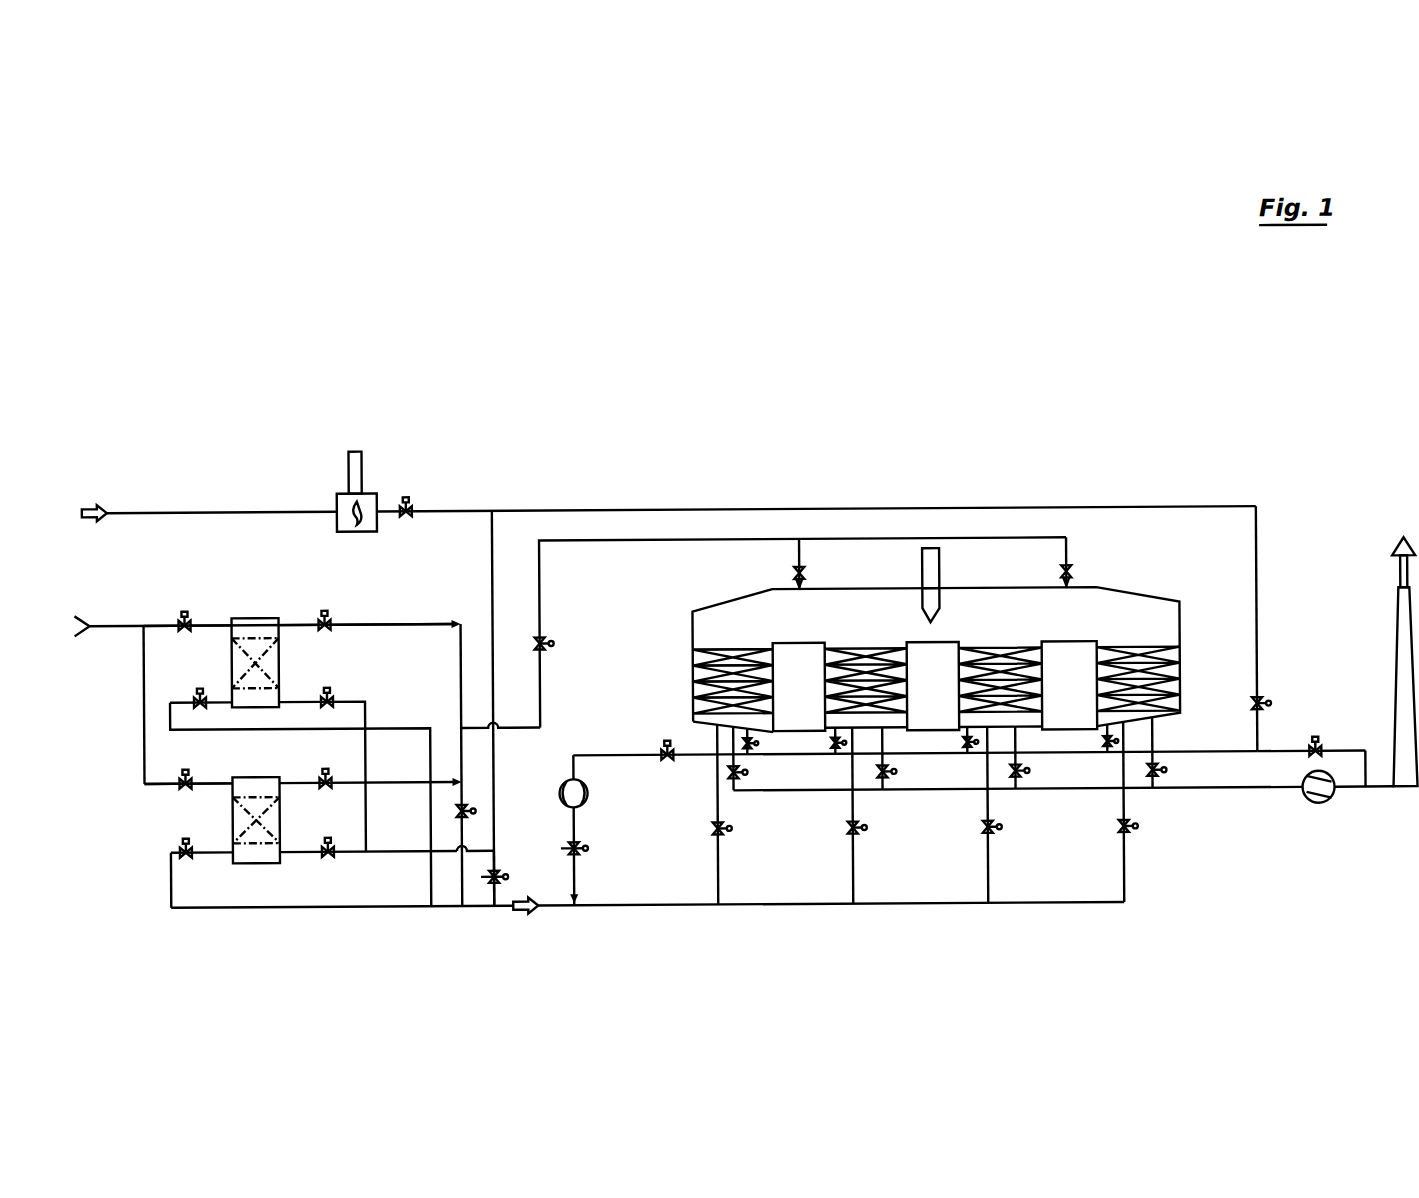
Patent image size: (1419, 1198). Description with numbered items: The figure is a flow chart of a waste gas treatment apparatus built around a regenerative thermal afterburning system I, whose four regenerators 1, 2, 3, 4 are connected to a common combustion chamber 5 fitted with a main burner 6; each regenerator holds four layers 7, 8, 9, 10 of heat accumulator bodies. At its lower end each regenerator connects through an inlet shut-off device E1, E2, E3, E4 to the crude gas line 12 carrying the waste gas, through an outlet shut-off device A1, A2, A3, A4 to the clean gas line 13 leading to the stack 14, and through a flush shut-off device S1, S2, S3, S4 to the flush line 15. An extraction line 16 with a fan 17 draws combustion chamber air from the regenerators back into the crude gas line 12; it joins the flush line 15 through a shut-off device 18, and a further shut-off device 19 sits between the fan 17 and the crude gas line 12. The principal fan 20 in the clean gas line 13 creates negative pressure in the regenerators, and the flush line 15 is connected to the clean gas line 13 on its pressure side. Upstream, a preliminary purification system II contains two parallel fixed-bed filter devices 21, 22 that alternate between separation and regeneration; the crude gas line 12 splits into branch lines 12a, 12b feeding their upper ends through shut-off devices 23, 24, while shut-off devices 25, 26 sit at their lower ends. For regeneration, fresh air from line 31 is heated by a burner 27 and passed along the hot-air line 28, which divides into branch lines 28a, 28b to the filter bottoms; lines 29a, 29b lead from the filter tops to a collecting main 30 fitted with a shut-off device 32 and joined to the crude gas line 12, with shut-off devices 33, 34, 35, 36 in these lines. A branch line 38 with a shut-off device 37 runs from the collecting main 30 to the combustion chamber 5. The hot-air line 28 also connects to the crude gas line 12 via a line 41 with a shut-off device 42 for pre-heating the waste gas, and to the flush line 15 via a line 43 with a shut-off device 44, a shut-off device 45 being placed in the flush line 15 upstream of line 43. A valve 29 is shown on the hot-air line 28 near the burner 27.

The regenerator 1 is at (693, 694).
The regenerator 2 is at (912, 670).
The regenerator 3 is at (959, 698).
The regenerator 4 is at (1096, 698).
The combustion chamber 5 is at (972, 620).
The main burner 6 is at (923, 576).
The layer 7 is at (773, 656).
The layer 8 is at (773, 672).
The layer 9 is at (773, 690).
The layer 10 is at (773, 704).
The crude gas line 12 is at (118, 624).
The branch line 12a is at (205, 626).
The branch line 12b is at (205, 786).
The clean gas line 13 is at (1380, 793).
The stack 14 is at (1398, 638).
The flush line 15 is at (1230, 756).
The extraction line 16 is at (622, 757).
The fan 17 is at (587, 797).
The shut-off device 18 is at (667, 757).
The shut-off device 19 is at (583, 850).
The principal fan 20 is at (1318, 809).
The fixed-bed filter device 21 is at (279, 664).
The fixed-bed filter device 22 is at (279, 822).
The shut-off device 23 is at (180, 620).
The shut-off device 24 is at (180, 780).
The shut-off device 25 is at (196, 702).
The shut-off device 26 is at (185, 852).
The burner 27 is at (365, 478).
The hot-air line 28 is at (453, 511).
The branch line 28a is at (367, 812).
The branch line 28b is at (284, 856).
The valve 29 is at (411, 508).
The line 29a is at (427, 622).
The line 29b is at (420, 784).
The collecting main 30 is at (461, 753).
The line 31 is at (262, 494).
The shut-off device 32 is at (456, 812).
The shut-off device 33 is at (330, 700).
The shut-off device 34 is at (334, 856).
The shut-off device 35 is at (328, 620).
The shut-off device 36 is at (324, 780).
The shut-off device 37 is at (542, 642).
The branch line 38 is at (540, 700).
The line 41 is at (496, 858).
The shut-off device 42 is at (504, 878).
The line 43 is at (1257, 591).
The shut-off device 44 is at (1264, 706).
The shut-off device 45 is at (1320, 744).
The outlet shut-off device A1 is at (748, 776).
The outlet shut-off device A2 is at (893, 776).
The outlet shut-off device A3 is at (1029, 776).
The outlet shut-off device A4 is at (1166, 776).
The inlet shut-off device E1 is at (712, 834).
The inlet shut-off device E2 is at (846, 834).
The inlet shut-off device E3 is at (982, 834).
The inlet shut-off device E4 is at (1118, 834).
The flush shut-off device S1 is at (763, 741).
The flush shut-off device S2 is at (830, 746).
The flush shut-off device S3 is at (962, 746).
The flush shut-off device S4 is at (1102, 746).
The regenerative thermal afterburning system I is at (664, 661).
The preliminary purification system II is at (230, 602).